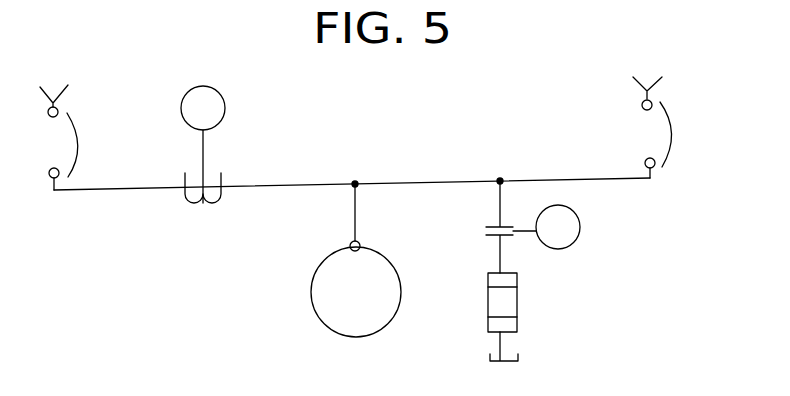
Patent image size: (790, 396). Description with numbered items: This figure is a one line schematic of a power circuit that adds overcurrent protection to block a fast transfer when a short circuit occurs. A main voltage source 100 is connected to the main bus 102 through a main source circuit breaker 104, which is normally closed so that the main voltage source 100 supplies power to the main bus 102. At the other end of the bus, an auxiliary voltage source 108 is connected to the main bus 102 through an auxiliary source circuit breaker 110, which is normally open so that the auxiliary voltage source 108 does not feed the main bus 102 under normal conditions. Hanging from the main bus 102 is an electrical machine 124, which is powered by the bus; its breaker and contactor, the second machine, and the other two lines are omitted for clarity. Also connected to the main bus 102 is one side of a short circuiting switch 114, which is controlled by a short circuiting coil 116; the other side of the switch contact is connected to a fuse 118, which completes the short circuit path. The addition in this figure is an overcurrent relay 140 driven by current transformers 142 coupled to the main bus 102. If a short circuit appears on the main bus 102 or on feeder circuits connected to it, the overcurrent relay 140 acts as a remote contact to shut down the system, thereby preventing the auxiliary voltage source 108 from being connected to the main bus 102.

The main voltage source 100 is at (56, 89).
The main source circuit breaker 104 is at (77, 147).
The auxiliary voltage source 108 is at (646, 80).
The auxiliary source circuit breaker 110 is at (676, 131).
The main bus 102 is at (420, 182).
The overcurrent relay 140 is at (226, 108).
The current transformer 142 is at (204, 204).
The electrical machine 124 is at (313, 300).
The short circuiting switch 114 is at (495, 222).
The short circuiting coil 116 is at (581, 227).
The fuse 118 is at (518, 297).